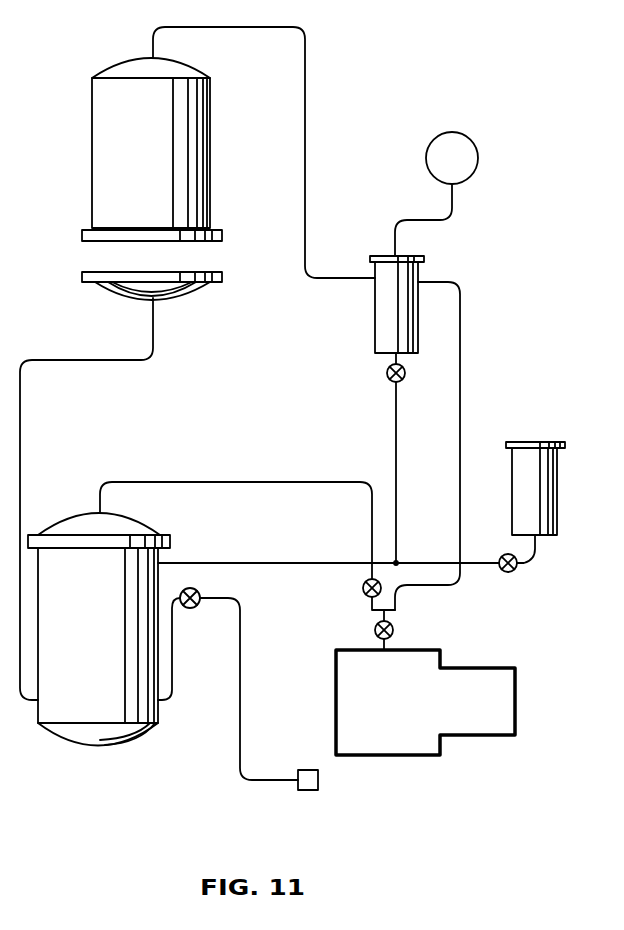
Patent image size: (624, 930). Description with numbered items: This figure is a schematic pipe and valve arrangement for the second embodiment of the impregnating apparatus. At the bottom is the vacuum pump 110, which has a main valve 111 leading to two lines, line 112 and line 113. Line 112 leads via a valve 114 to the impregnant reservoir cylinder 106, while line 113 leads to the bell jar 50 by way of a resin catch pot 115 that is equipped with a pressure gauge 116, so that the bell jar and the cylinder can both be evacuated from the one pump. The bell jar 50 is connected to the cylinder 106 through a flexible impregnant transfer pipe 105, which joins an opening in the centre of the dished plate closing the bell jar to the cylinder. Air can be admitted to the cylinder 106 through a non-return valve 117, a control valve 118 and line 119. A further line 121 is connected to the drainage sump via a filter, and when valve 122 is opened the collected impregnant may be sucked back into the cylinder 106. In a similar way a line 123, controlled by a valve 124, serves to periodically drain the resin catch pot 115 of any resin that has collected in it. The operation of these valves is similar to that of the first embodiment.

The bell jar 50 is at (103, 152).
The flexible impregnant transfer pipe 105 is at (20, 438).
The impregnant reservoir cylinder 106 is at (125, 720).
The vacuum pump 110 is at (483, 724).
The main valve 111 is at (394, 627).
The line 112 is at (240, 482).
The line 113 is at (462, 384).
The valve 114 is at (362, 588).
The resin catch pot 115 is at (378, 323).
The pressure gauge 116 is at (470, 167).
The non-return valve 117 is at (540, 456).
The control valve 118 is at (516, 572).
The line 119 is at (268, 563).
The line 121 is at (243, 772).
The valve 122 is at (197, 607).
The line 123 is at (396, 436).
The valve 124 is at (386, 373).